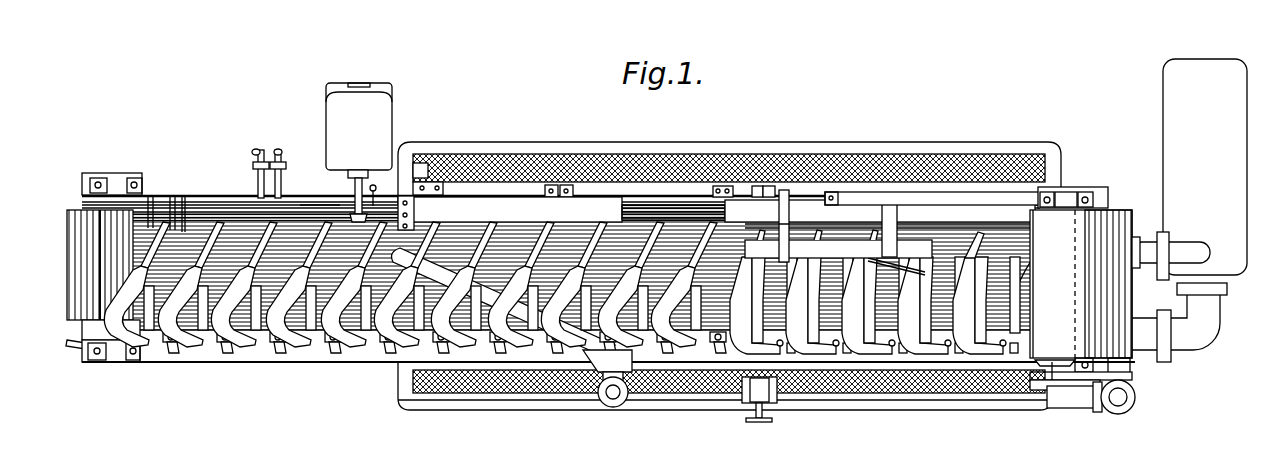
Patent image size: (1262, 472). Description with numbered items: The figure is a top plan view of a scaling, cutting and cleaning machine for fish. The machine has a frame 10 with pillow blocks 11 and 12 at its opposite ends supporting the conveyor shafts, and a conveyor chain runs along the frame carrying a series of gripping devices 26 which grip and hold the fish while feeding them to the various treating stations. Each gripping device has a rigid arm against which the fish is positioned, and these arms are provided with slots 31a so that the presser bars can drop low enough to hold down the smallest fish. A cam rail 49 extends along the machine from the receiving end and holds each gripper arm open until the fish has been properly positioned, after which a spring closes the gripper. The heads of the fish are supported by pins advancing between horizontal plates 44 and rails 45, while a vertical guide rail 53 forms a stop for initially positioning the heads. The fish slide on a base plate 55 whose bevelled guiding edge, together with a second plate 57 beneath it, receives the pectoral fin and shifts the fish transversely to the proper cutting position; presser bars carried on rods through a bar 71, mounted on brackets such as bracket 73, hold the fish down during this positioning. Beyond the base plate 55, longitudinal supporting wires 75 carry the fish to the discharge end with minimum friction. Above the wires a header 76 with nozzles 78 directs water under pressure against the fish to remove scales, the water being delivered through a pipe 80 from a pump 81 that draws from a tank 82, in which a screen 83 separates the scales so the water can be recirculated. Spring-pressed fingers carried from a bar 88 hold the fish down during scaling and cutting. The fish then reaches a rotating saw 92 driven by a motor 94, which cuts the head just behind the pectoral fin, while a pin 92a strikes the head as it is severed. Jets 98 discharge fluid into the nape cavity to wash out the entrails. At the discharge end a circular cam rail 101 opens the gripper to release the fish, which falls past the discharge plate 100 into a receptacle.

The frame 10 is at (292, 363).
The pillow block 11 is at (1063, 196).
The pillow block 12 is at (112, 182).
The gripping device 26 is at (917, 270).
The slot 31a is at (152, 226).
The horizontal plate 44 is at (978, 236).
The rail 45 is at (672, 206).
The cam rail 49 is at (1022, 358).
The vertical guide rail 53 is at (963, 200).
The base plate 55 is at (986, 305).
The second plate 57 is at (846, 228).
The bar 71 is at (838, 250).
The bracket 73 is at (790, 188).
The supporting wire 75 is at (182, 230).
The header 76 is at (460, 236).
The nozzle 78 is at (893, 200).
The pipe 80 is at (606, 400).
The pump 81 is at (1189, 210).
The tank 82 is at (842, 410).
The screen 83 is at (726, 162).
The bar 88 is at (497, 197).
The rotating saw 92 is at (320, 210).
The pin 92a is at (374, 184).
The motor 94 is at (388, 130).
The jet 98 is at (275, 185).
The discharge plate 100 is at (67, 266).
The circular cam rail 101 is at (70, 348).